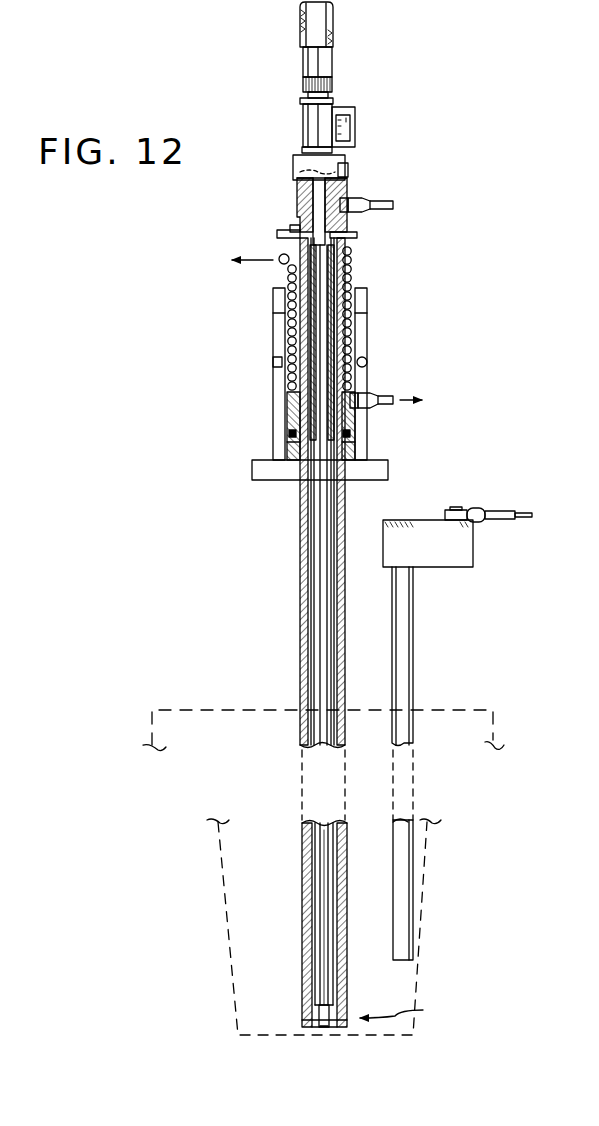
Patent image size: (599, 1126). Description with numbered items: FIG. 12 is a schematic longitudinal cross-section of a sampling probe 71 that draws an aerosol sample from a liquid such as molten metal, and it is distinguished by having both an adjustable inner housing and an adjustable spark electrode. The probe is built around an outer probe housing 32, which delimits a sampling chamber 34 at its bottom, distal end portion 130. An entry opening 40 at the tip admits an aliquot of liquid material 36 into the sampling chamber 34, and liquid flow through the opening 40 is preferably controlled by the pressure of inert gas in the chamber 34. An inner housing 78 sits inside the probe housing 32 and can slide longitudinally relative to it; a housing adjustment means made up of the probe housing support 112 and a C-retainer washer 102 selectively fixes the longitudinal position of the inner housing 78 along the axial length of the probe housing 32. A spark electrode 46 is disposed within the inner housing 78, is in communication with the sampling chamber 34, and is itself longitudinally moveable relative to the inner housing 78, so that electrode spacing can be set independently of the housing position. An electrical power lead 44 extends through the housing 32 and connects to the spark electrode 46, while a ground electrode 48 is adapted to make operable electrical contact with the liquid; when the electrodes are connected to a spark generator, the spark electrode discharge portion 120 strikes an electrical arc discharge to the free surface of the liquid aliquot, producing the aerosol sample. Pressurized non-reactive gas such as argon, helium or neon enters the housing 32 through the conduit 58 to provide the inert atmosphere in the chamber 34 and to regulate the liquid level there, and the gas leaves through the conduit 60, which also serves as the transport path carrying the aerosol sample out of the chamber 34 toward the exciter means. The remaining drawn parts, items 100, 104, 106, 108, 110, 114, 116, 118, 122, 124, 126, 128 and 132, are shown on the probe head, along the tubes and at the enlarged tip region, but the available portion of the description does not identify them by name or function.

The probe housing 32 is at (302, 668).
The sampling chamber 34 is at (316, 1018).
The liquid material 36 is at (272, 871).
The opening 40 is at (322, 1029).
The electrical power lead 44 is at (349, 170).
The spark electrode 46 is at (322, 585).
The ground electrode 48 is at (398, 686).
The conduit 58 is at (385, 205).
The conduit 60 is at (385, 394).
The sampling probe 71 is at (275, 541).
The inner housing 78 is at (313, 640).
The body member 100 is at (352, 243).
The C-retainer washer 102 is at (358, 232).
The upper body 104 is at (298, 198).
The micrometer 106 is at (340, 78).
The indicator 108 is at (355, 128).
The spring 110 is at (356, 280).
The probe housing support 112 is at (288, 243).
The flange 114 is at (268, 458).
The bolt 116 is at (273, 364).
The tube bottom 118 is at (316, 1028).
The spark electrode discharge portion 120 is at (326, 1028).
The capillary 122 is at (326, 866).
The enlarged region 124 is at (295, 917).
The tube end 126 is at (380, 870).
The inner sleeve 128 is at (340, 343).
The distal end portion 130 is at (412, 1010).
The shoulder 132 is at (290, 226).